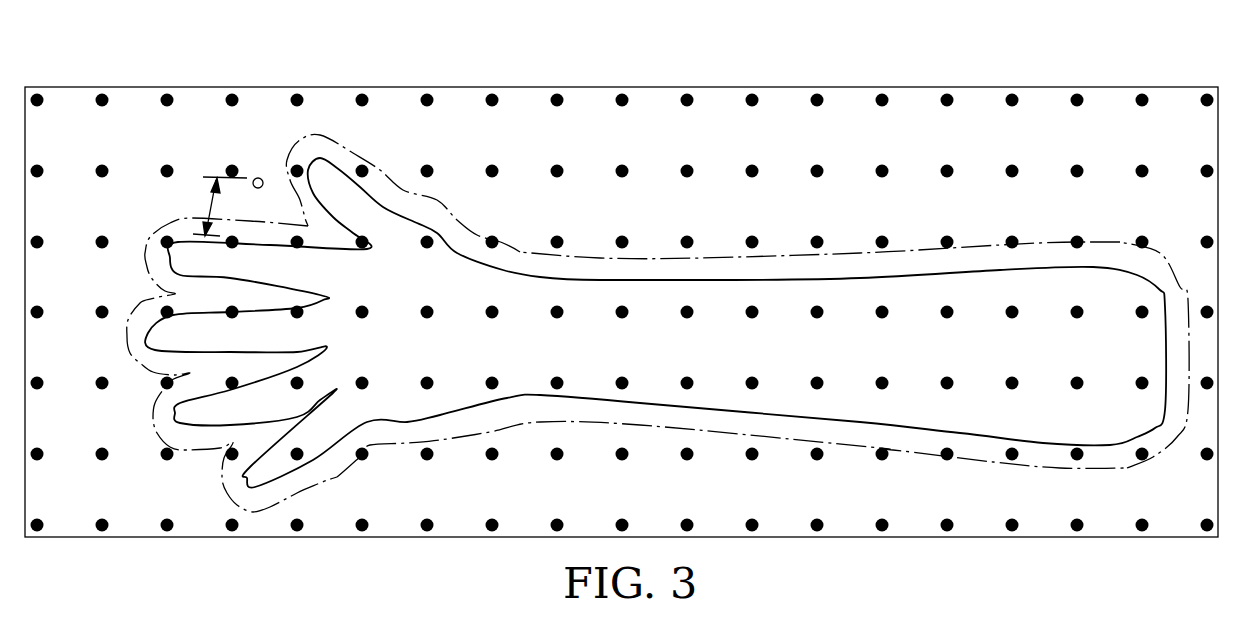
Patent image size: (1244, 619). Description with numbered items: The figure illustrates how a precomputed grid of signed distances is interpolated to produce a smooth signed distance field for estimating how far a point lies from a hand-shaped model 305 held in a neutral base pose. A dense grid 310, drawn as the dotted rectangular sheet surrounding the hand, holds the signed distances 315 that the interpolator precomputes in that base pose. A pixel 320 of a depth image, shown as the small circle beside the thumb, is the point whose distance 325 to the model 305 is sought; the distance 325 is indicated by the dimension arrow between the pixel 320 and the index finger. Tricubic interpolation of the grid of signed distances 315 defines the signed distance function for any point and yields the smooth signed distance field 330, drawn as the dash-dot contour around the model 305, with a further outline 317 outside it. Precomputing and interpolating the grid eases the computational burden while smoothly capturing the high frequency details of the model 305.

The model 305 is at (929, 413).
The dense grid 310 is at (715, 87).
The signed distances 315 is at (628, 233).
The outer offset outline 317 is at (823, 233).
The pixel 320 is at (257, 177).
The distance 325 is at (208, 204).
The smooth signed distance field 330 is at (462, 438).